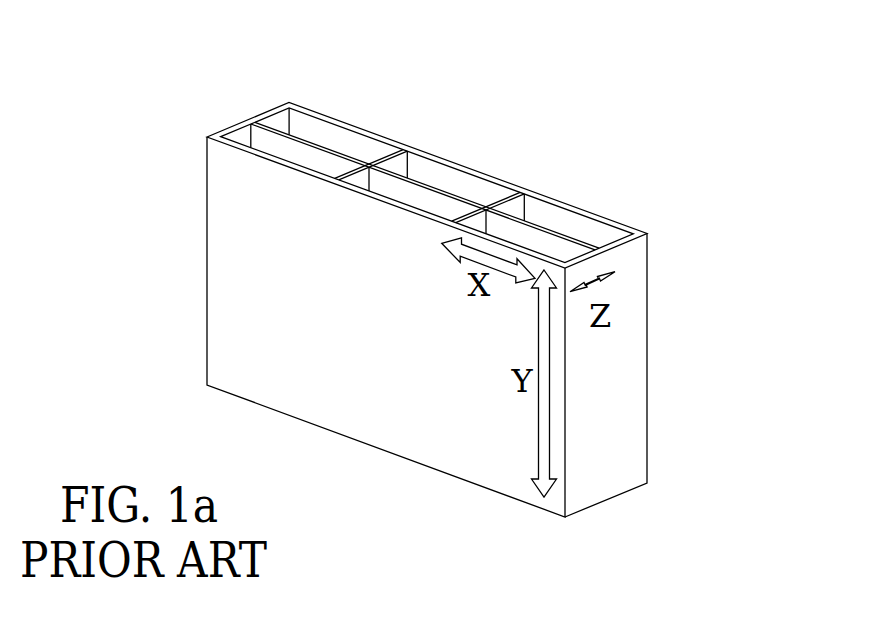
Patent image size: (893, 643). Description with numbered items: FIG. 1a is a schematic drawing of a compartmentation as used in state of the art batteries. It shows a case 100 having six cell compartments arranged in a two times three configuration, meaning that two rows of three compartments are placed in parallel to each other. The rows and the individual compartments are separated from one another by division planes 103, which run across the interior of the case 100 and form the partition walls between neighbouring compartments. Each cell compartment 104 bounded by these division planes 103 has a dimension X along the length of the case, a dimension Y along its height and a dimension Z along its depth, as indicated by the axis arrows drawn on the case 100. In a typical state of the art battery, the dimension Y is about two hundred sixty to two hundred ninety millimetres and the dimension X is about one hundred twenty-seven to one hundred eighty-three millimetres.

The case 100 is at (620, 105).
The division planes 103 is at (353, 173).
The cell compartment 104 is at (337, 135).